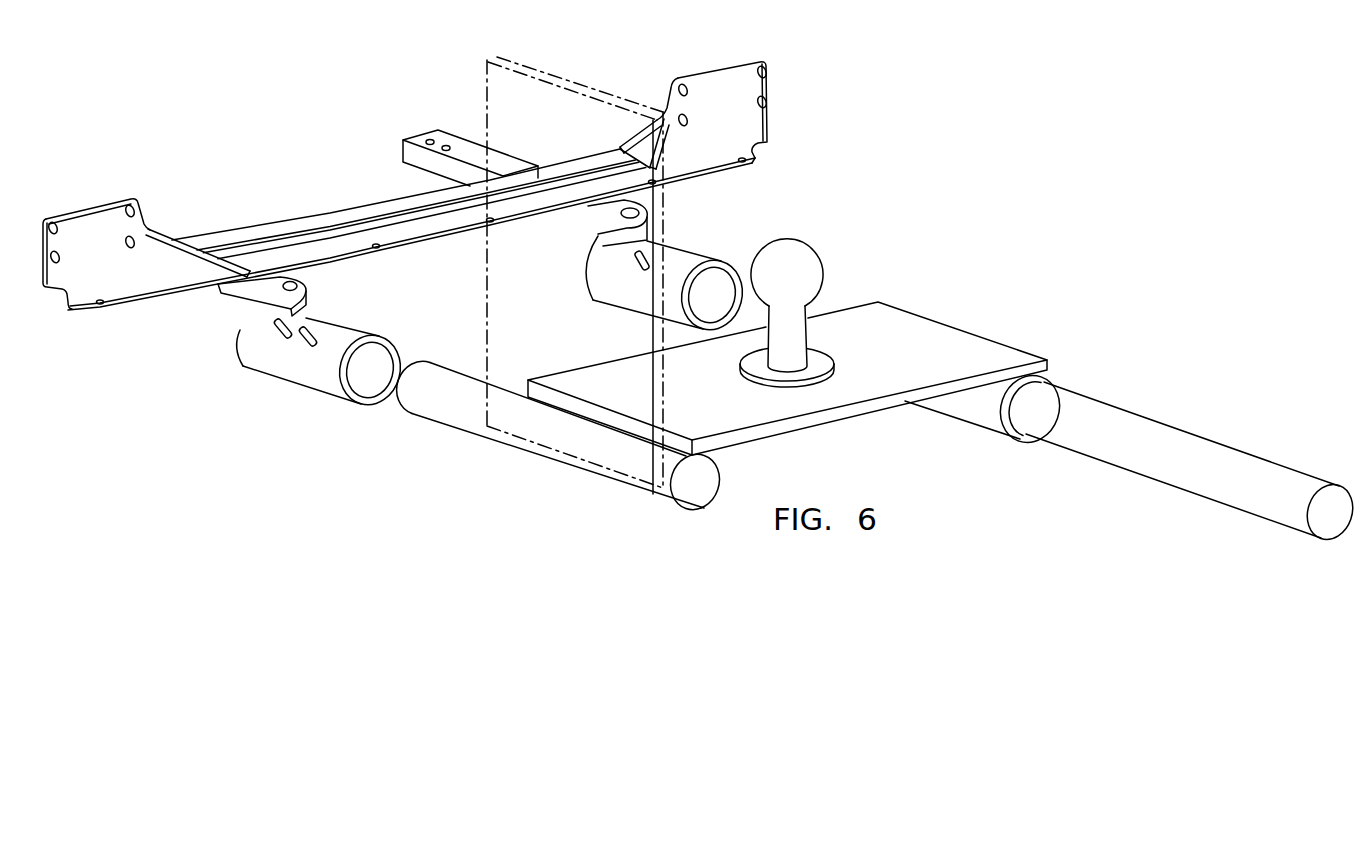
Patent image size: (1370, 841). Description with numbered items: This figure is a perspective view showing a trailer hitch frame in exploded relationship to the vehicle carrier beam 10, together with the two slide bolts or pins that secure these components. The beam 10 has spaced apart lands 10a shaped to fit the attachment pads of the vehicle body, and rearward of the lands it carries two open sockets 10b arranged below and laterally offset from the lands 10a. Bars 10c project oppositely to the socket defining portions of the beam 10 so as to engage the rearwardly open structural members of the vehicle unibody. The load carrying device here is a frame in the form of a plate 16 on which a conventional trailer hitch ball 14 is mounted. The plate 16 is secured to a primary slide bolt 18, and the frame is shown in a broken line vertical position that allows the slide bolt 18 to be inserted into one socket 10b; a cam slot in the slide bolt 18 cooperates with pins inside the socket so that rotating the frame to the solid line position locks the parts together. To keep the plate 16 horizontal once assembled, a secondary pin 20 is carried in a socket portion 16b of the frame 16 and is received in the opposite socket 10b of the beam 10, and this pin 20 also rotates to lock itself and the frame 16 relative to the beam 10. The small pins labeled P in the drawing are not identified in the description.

The beam 10 is at (716, 43).
The lands 10a is at (122, 265).
The open sockets 10b is at (265, 296).
The bars 10c is at (470, 155).
The trailer hitch ball 14 is at (798, 272).
The plate 16 is at (503, 262).
The socket portion 16b is at (976, 400).
The primary slide bolt 18 is at (448, 407).
The secondary pin 20 is at (1087, 437).
The pin P is at (310, 338).